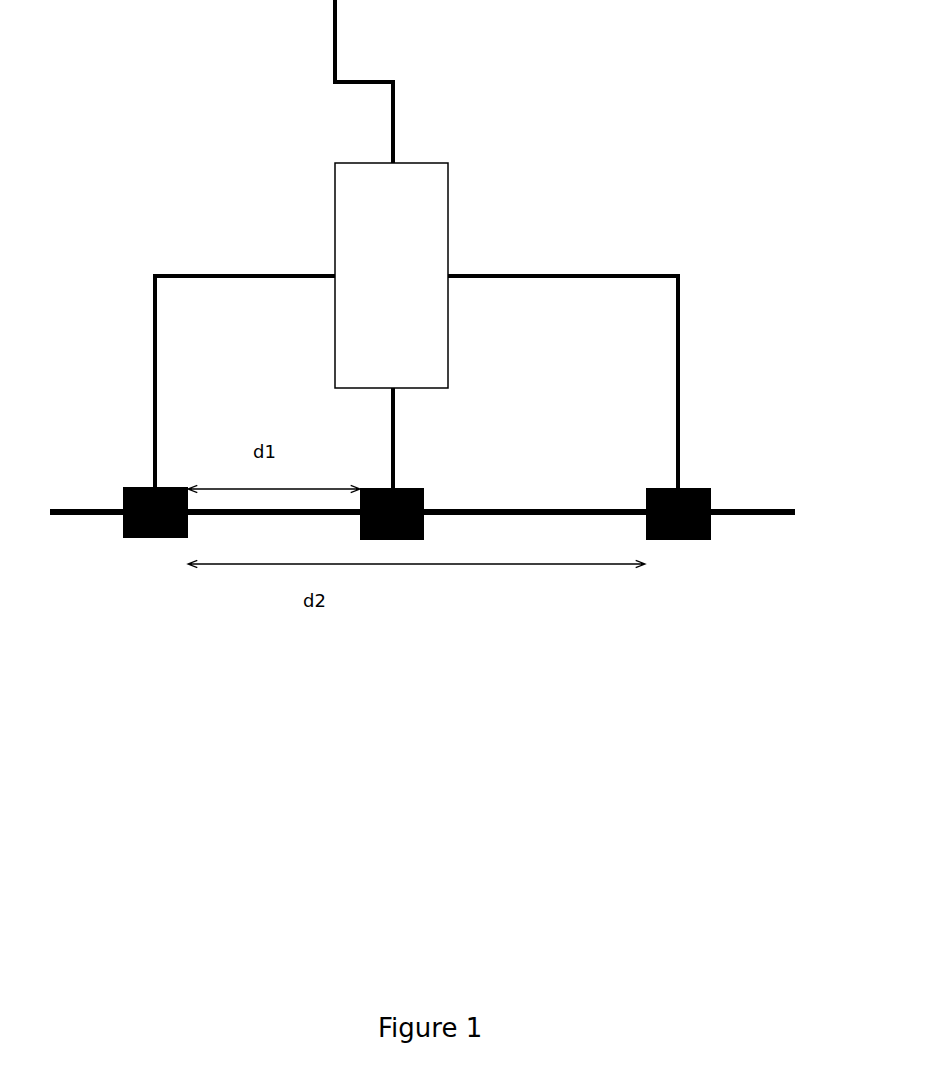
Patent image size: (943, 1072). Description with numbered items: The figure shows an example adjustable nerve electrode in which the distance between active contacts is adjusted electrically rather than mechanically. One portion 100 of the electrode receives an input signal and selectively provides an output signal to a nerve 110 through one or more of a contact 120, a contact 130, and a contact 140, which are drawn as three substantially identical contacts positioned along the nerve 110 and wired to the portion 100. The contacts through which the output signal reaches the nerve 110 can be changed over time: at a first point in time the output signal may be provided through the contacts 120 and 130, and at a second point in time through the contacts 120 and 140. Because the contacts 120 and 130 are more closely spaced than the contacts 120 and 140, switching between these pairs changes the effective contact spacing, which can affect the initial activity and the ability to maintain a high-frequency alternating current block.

The portion of the electrode 100 is at (459, 205).
The nerve 110 is at (795, 495).
The contact 120 is at (154, 546).
The contact 130 is at (433, 472).
The contact 140 is at (689, 552).